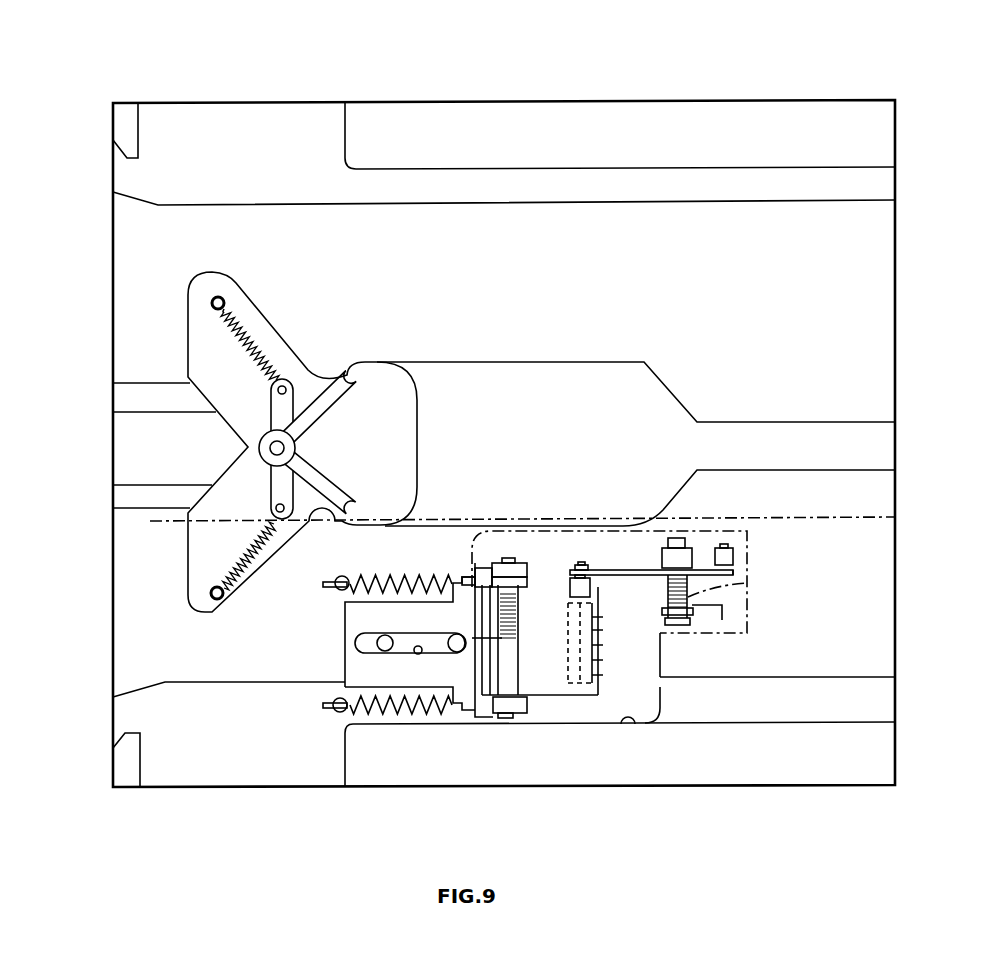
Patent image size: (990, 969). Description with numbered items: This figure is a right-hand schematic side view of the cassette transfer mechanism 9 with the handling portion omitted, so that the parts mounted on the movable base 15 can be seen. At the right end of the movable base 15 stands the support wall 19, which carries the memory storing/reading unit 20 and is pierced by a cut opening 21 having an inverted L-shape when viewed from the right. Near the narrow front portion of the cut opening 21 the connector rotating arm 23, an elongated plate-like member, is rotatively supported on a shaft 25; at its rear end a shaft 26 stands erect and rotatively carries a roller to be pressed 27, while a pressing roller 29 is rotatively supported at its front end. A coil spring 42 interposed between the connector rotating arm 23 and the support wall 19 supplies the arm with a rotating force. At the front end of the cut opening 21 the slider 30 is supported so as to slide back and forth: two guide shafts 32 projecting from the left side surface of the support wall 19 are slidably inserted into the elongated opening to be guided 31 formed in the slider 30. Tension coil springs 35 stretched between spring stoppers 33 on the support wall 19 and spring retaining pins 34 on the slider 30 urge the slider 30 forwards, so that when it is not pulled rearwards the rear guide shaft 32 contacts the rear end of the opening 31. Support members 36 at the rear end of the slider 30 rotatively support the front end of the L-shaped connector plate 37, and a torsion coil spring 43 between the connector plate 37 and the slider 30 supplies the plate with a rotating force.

The cassette transfer mechanism 9 is at (822, 96).
The movable base 15 is at (430, 123).
The support wall 19 is at (870, 517).
The memory storing/reading unit 20 is at (562, 750).
The cut opening 21 is at (632, 726).
The connector rotating arm 23 is at (620, 568).
The shaft 25 is at (677, 538).
The shaft 26 is at (723, 544).
The roller to be pressed 27 is at (735, 553).
The pressing roller 29 is at (593, 588).
The slider 30 is at (343, 614).
The opening to be guided 31 is at (417, 655).
The guide shafts 32 is at (375, 645).
The spring stoppers 33 is at (327, 580).
The spring retaining pins 34 is at (468, 578).
The tension coil springs 35 is at (402, 583).
The support members 36 is at (518, 565).
The connector plate 37 is at (577, 690).
The coil spring 42 is at (749, 583).
The torsion coil spring 43 is at (515, 600).